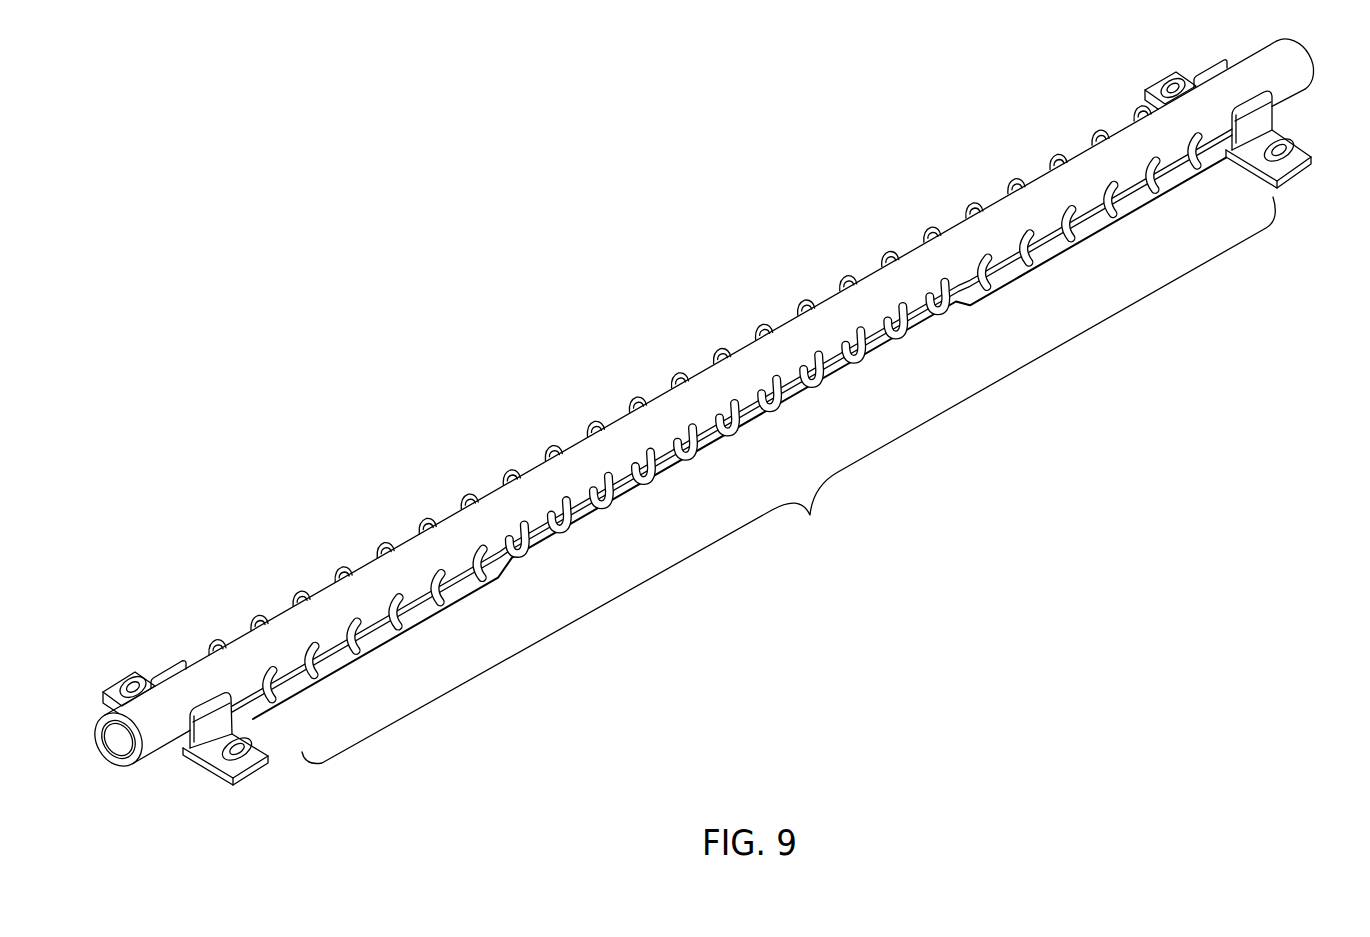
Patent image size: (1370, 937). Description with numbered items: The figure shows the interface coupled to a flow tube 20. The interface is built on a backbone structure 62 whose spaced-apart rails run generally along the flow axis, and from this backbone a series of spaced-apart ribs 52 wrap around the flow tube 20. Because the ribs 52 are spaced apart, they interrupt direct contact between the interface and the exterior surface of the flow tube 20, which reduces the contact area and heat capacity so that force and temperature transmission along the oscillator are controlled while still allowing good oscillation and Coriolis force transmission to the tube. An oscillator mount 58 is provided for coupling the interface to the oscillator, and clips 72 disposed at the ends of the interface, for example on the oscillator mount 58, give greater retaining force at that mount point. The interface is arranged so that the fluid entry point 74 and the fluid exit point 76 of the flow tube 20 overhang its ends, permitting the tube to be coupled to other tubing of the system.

The flow tube 20 is at (207, 678).
The ribs 52 is at (1008, 182).
The oscillator mount 58 is at (118, 671).
The backbone structure 62 is at (788, 480).
The clips 72 is at (208, 770).
The fluid entry point 74 is at (114, 769).
The fluid exit point 76 is at (1319, 80).